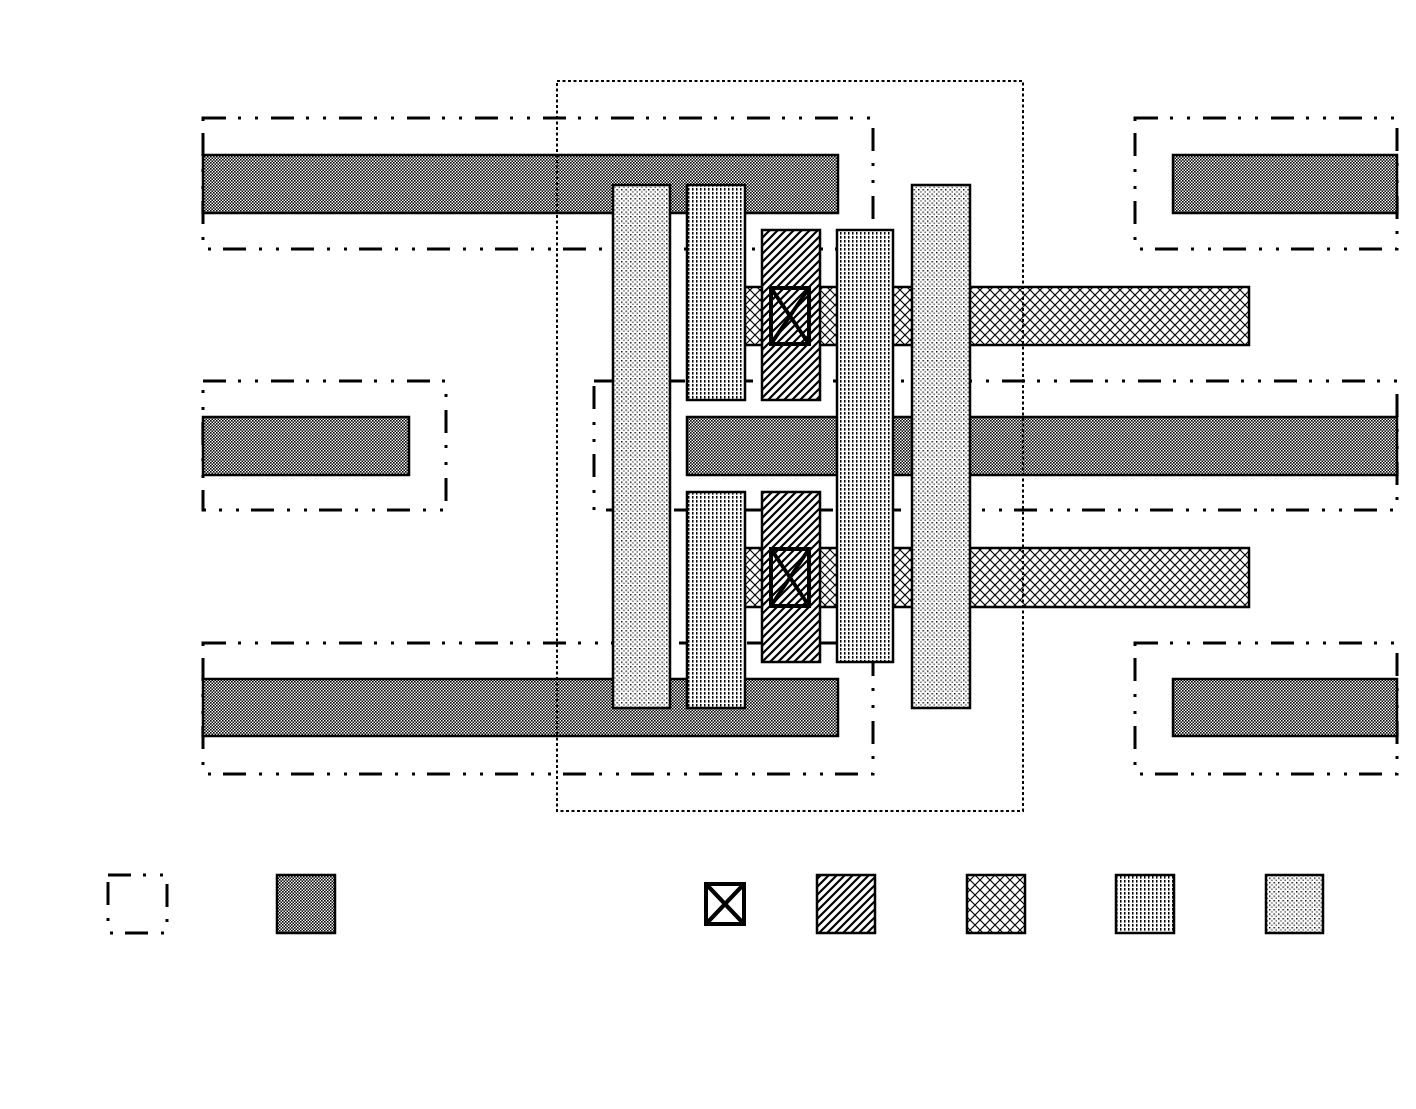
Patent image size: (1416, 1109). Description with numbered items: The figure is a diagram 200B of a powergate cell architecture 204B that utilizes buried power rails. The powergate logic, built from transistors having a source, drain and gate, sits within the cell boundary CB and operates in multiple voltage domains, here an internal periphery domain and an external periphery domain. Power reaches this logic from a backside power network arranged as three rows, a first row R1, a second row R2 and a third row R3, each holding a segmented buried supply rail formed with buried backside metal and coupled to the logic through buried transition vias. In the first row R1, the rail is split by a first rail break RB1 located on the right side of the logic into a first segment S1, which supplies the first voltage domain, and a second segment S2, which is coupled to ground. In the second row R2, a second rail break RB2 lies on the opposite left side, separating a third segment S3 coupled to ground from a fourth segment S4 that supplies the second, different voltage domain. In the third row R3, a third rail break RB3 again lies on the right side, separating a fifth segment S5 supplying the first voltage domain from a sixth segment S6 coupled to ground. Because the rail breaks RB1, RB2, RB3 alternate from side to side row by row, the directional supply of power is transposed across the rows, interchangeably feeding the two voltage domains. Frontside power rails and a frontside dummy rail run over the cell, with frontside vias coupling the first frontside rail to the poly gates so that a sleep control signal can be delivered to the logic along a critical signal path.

The diagram 200B is at (246, 36).
The powergate cell architecture 204B is at (805, 417).
The first row R1 is at (167, 110).
The second row R2 is at (167, 370).
The third row R3 is at (167, 632).
The first segment S1 is at (520, 184).
The second segment S2 is at (1285, 184).
The third segment S3 is at (306, 446).
The fourth segment S4 is at (1042, 446).
The fifth segment S5 is at (520, 707).
The sixth segment S6 is at (1285, 707).
The cell boundary CB is at (557, 347).
The first rail break RB1 is at (1062, 158).
The second rail break RB2 is at (520, 475).
The third rail break RB3 is at (1062, 737).